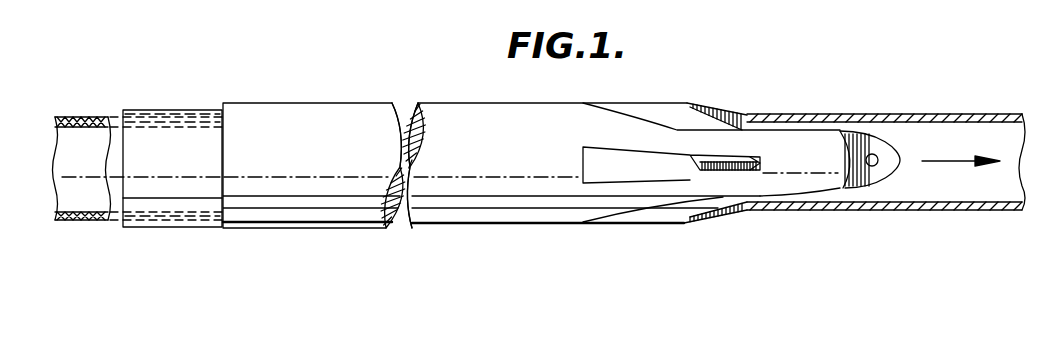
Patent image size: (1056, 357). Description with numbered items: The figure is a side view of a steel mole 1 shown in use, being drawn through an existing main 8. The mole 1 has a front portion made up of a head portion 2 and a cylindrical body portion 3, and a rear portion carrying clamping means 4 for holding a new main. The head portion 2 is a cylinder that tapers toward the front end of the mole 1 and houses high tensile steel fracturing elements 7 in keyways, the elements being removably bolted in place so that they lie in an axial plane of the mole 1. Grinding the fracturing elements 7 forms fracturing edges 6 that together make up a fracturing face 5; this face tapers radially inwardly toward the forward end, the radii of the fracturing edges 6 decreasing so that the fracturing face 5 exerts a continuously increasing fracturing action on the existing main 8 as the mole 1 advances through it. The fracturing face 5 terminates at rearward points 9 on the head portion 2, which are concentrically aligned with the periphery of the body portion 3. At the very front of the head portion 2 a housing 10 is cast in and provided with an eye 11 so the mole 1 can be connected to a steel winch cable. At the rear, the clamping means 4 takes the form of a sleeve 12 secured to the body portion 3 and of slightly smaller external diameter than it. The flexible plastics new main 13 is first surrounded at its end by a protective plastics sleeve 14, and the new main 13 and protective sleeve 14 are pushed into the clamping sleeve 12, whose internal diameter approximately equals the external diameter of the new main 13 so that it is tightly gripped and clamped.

The mole 1 is at (427, 104).
The head portion 2 is at (780, 140).
The body portion 3 is at (505, 80).
The clamping means 4 is at (148, 110).
The fracturing face 5 is at (690, 117).
The fracturing edges 6 is at (730, 150).
The fracturing elements 7 is at (625, 102).
The existing main 8 is at (930, 117).
The rearward points 9 is at (697, 100).
The housing 10 is at (867, 183).
The eye 11 is at (872, 153).
The sleeve 12 is at (205, 207).
The new main 13 is at (83, 222).
The protective plastics sleeve 14 is at (93, 223).